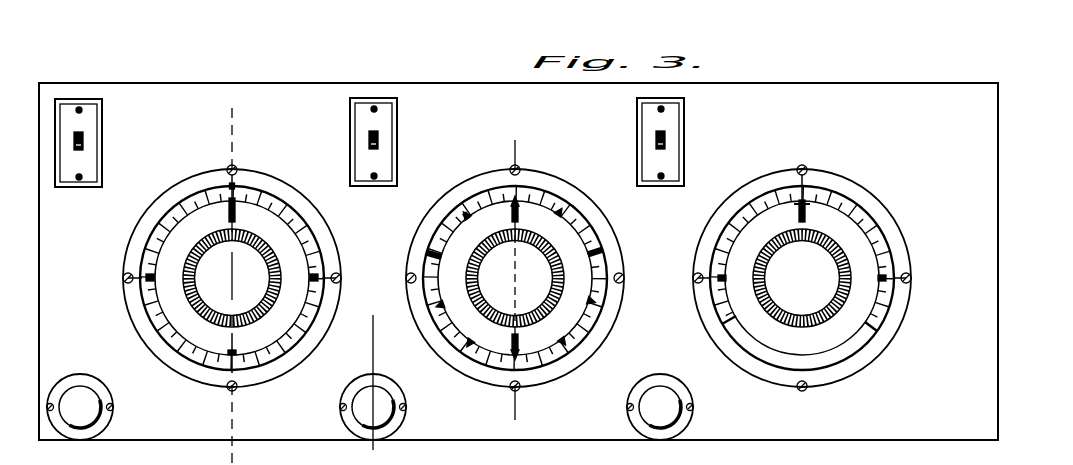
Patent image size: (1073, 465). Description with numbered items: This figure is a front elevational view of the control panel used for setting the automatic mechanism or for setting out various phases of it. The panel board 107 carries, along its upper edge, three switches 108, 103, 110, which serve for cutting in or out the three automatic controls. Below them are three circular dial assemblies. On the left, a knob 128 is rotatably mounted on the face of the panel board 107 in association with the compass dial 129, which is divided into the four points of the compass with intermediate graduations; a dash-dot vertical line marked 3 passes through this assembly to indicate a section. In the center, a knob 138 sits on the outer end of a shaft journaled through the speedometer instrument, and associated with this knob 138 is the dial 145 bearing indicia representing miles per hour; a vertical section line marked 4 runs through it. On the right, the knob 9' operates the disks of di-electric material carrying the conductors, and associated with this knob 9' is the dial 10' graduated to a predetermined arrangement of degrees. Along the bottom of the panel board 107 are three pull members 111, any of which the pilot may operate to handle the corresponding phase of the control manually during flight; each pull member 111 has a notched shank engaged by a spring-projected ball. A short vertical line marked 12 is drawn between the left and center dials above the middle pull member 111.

The panel board 107 is at (990, 178).
The switch 108 is at (80, 133).
The switch 103 is at (377, 132).
The switch 110 is at (663, 133).
The section line 3 is at (232, 280).
The section line 4 is at (513, 278).
The section line 12 is at (375, 380).
The knob 128 is at (197, 253).
The compass dial 129 is at (143, 296).
The dial 145 is at (590, 228).
The knob 138 is at (541, 291).
The knob 9' is at (831, 249).
The dial 10' is at (821, 272).
The pull member 111 is at (88, 418).